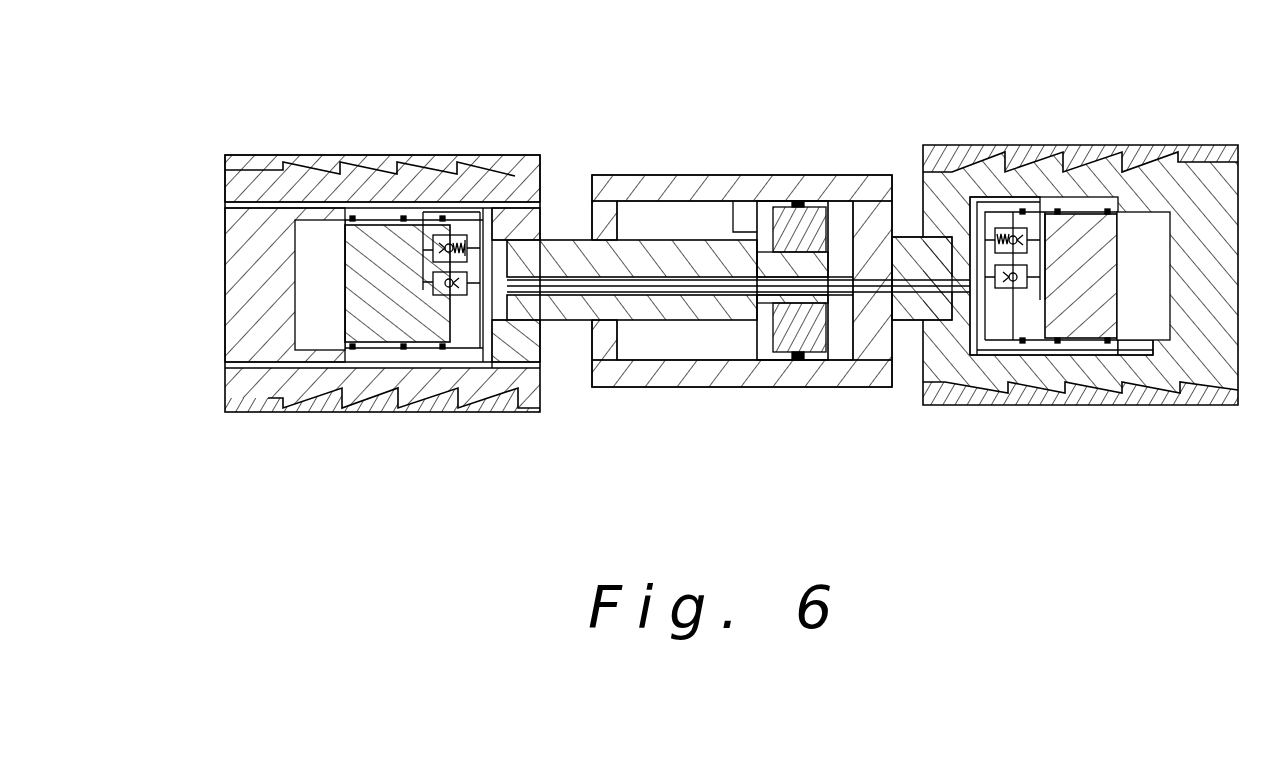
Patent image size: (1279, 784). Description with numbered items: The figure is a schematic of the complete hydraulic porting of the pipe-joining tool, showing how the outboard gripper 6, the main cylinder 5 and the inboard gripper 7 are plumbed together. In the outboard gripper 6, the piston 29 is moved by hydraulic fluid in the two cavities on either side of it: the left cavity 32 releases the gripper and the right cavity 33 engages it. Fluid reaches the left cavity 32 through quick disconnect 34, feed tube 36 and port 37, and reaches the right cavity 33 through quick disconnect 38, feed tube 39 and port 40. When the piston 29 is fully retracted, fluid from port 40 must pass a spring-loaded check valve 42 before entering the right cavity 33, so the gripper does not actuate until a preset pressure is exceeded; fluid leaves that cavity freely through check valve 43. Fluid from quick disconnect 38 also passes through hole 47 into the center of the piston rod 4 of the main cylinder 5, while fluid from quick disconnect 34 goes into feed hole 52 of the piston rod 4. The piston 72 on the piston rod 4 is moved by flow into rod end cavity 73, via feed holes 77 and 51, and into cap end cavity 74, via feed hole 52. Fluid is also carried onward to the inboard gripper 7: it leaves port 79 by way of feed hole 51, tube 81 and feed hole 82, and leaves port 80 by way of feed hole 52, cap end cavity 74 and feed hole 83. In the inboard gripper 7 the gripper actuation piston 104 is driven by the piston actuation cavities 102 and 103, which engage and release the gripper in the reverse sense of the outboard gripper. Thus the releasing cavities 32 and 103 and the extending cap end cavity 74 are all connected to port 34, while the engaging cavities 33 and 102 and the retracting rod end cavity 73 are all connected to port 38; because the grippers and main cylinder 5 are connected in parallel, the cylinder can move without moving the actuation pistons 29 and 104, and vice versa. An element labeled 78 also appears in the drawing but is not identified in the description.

The piston rod 4 is at (637, 322).
The main cylinder 5 is at (693, 148).
The outboard gripper 6 is at (333, 118).
The inboard gripper 7 is at (1082, 130).
The piston 29 is at (461, 314).
The left cavity 32 is at (334, 271).
The right cavity 33 is at (478, 340).
The quick disconnect 34 is at (227, 363).
The feed tube 36 is at (263, 368).
The port 37 is at (326, 334).
The quick disconnect 38 is at (226, 202).
The feed tube 39 is at (256, 210).
The port 40 is at (348, 224).
The spring-loaded check valve 42 is at (460, 238).
The check valve 43 is at (490, 213).
The hole 47 is at (363, 238).
The feed hole 51 is at (562, 275).
The feed hole 52 is at (598, 322).
The piston 72 is at (775, 208).
The rod end cavity 73 is at (640, 216).
The cap end cavity 74 is at (839, 338).
The feed hole 77 is at (732, 240).
The cylinder end wall 78 is at (862, 322).
The port 79 is at (970, 190).
The port 80 is at (960, 400).
The tube 81 is at (858, 235).
The feed hole 82 is at (912, 235).
The feed hole 83 is at (890, 320).
The piston actuation cavity 102 is at (999, 317).
The piston actuation cavity 103 is at (1146, 283).
The gripper actuation piston 104 is at (1132, 170).